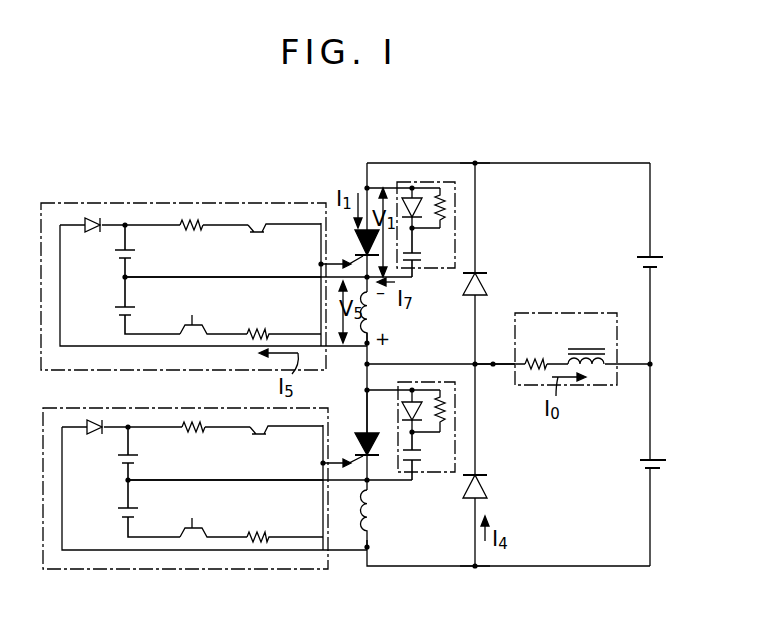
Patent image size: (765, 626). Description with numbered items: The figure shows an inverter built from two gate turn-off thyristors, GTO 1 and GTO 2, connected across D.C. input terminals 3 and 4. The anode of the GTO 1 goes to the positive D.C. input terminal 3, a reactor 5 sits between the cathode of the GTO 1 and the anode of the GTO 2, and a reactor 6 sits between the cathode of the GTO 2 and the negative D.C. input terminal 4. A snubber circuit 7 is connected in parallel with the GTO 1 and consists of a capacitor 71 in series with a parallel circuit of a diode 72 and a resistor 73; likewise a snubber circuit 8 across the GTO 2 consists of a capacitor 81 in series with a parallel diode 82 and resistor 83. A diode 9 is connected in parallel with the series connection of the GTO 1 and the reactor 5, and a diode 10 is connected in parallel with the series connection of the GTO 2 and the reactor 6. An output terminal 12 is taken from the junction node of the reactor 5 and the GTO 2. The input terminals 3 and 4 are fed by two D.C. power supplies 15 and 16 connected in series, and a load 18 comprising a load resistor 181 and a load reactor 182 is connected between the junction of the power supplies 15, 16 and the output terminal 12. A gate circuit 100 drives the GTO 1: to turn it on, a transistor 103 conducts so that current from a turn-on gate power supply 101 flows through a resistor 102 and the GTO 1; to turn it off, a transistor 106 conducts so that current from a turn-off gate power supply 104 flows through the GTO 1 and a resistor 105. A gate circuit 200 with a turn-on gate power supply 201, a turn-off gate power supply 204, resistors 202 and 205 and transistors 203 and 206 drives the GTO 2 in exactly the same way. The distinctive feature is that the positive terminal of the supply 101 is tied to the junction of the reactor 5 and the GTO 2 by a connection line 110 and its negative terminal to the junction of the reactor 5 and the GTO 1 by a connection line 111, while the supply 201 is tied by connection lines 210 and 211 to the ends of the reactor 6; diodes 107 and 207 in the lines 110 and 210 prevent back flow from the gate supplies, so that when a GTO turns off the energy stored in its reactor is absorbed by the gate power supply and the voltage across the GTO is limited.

The GTO 1 is at (356, 226).
The GTO 2 is at (357, 440).
The D.C. input terminal 3 is at (475, 163).
The D.C. input terminal 4 is at (477, 568).
The reactor 5 is at (374, 322).
The reactor 6 is at (374, 512).
The snubber circuit 7 is at (416, 268).
The snubber circuit 8 is at (415, 472).
The diode 9 is at (489, 288).
The diode 10 is at (489, 490).
The output terminal 12 is at (493, 366).
The D.C. power supply 15 is at (640, 262).
The D.C. power supply 16 is at (640, 467).
The load 18 is at (583, 385).
The capacitor 71 is at (421, 256).
The diode 72 is at (412, 196).
The resistor 73 is at (447, 206).
The capacitor 81 is at (422, 456).
The diode 82 is at (413, 400).
The resistor 83 is at (446, 415).
The gate circuit 100 is at (184, 203).
The GTO turn-on gate power supply 101 is at (114, 252).
The resistor 102 is at (197, 229).
The transistor 103 is at (260, 235).
The GTO turn-off gate power supply 104 is at (147, 305).
The resistor 105 is at (284, 321).
The transistor 106 is at (213, 312).
The diode 107 is at (89, 216).
The connection line 110 is at (78, 346).
The connection line 111 is at (232, 277).
The load resistor 181 is at (545, 360).
The load reactor 182 is at (603, 344).
The gate circuit 200 is at (66, 410).
The GTO turn-on gate power supply 201 is at (134, 456).
The resistor 202 is at (192, 424).
The transistor 203 is at (262, 437).
The GTO turn-off gate power supply 204 is at (130, 514).
The resistor 205 is at (266, 537).
The transistor 206 is at (196, 522).
The diode 207 is at (92, 435).
The connection line 210 is at (78, 550).
The connection line 211 is at (225, 474).